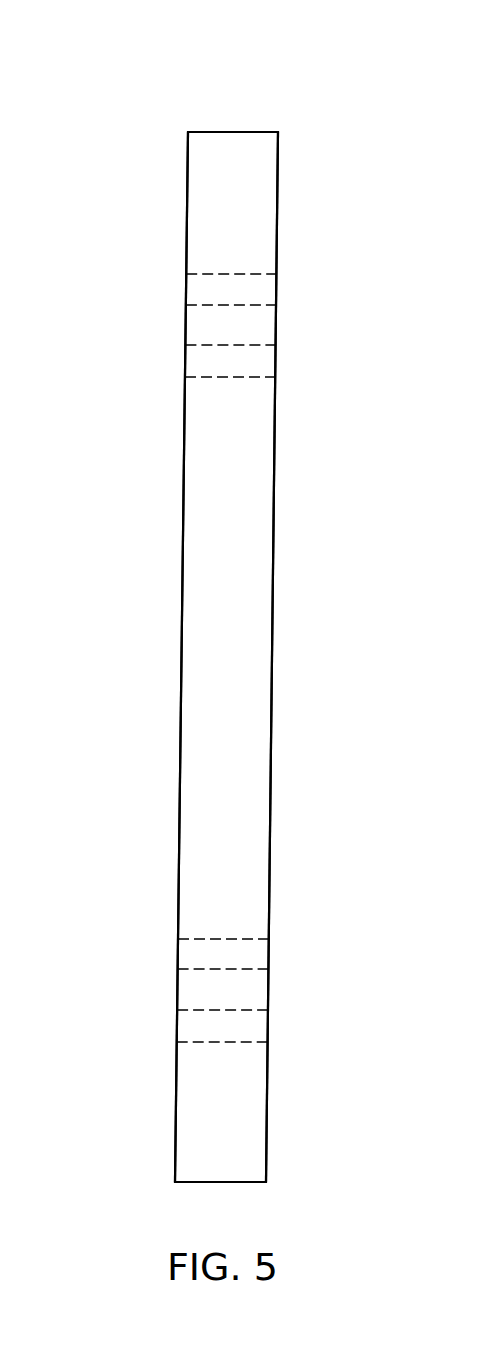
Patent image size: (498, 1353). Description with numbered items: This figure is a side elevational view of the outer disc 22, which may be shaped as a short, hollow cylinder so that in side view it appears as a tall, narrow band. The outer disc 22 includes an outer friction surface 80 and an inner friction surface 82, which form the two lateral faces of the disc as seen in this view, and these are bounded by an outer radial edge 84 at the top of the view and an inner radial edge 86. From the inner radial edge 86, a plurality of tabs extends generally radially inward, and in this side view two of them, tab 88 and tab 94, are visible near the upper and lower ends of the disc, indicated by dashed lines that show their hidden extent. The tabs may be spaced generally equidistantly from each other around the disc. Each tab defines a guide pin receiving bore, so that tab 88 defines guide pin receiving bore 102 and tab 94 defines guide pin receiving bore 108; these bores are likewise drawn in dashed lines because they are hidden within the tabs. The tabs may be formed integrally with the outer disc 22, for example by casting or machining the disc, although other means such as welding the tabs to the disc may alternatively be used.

The outer disc 22 is at (123, 98).
The outer friction surface 80 is at (188, 172).
The inner friction surface 82 is at (278, 172).
The outer radial edge 84 is at (233, 131).
The inner radial edge 86 is at (237, 274).
The tab 88 is at (198, 359).
The tab 94 is at (190, 952).
The guide pin receiving bore 102 is at (255, 305).
The guide pin receiving bore 108 is at (250, 1010).